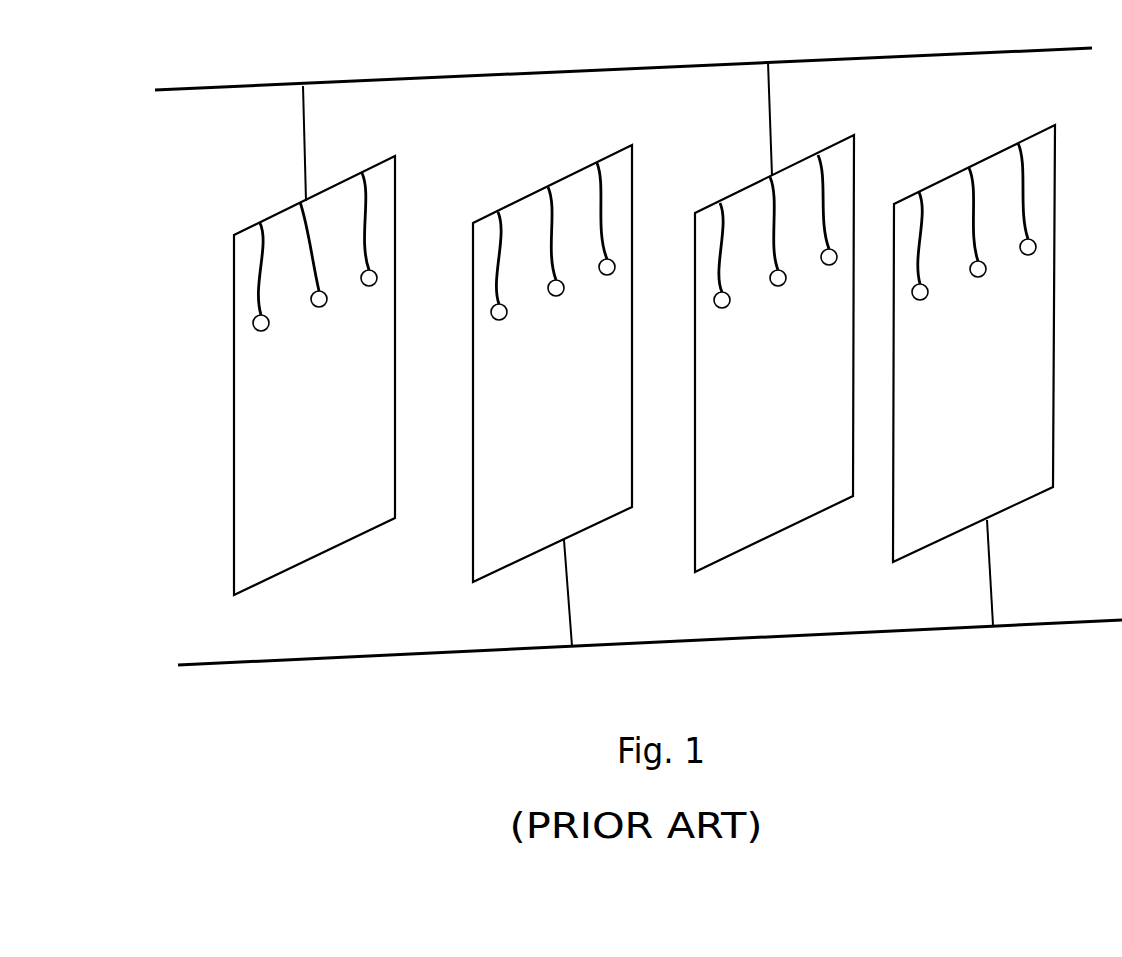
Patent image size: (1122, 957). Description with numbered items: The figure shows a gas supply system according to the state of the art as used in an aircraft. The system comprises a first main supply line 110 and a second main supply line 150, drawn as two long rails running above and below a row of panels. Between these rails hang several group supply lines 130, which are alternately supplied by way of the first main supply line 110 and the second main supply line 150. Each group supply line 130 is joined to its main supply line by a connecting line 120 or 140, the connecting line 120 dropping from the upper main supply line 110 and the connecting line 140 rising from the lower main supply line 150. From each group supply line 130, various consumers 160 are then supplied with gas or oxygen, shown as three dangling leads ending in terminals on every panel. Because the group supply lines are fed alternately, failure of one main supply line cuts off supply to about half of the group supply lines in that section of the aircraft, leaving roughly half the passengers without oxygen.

The first main supply line 110 is at (553, 72).
The connecting line 120 is at (306, 128).
The group supply line 130 is at (357, 538).
The connecting line 140 is at (570, 597).
The second main supply line 150 is at (827, 636).
The consumers 160 is at (368, 286).